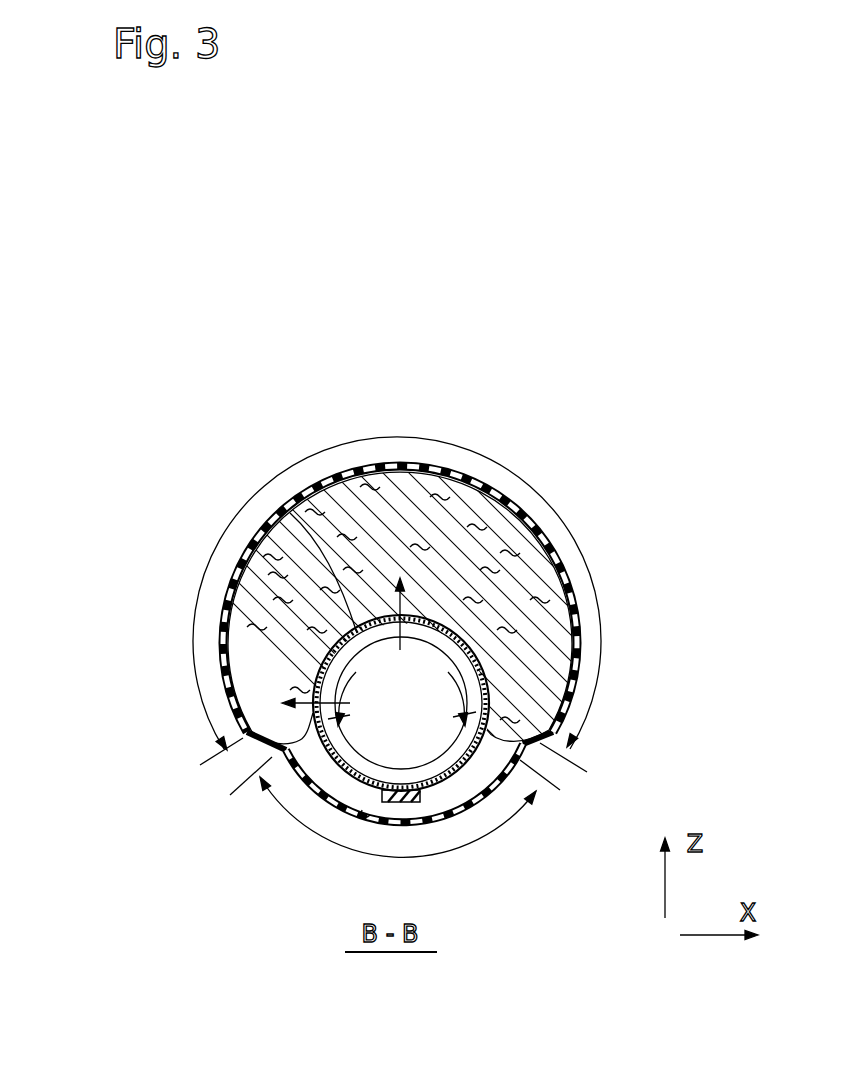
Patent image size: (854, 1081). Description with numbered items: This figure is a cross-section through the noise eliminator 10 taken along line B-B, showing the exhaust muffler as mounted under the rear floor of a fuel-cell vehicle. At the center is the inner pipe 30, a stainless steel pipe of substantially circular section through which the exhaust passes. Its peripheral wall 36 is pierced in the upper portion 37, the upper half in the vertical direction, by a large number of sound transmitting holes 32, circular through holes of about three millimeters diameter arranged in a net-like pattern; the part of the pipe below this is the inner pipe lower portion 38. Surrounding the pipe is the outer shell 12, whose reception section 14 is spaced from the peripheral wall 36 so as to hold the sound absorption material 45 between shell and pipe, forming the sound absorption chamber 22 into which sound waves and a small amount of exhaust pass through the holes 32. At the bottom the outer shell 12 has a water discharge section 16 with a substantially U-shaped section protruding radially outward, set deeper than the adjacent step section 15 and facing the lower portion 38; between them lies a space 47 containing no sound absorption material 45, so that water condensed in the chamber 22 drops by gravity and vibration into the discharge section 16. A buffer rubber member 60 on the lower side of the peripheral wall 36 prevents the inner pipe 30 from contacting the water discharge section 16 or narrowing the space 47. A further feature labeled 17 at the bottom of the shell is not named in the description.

The noise eliminator 10 is at (640, 436).
The outer shell 12 is at (466, 418).
The reception section 14 is at (196, 612).
The step section 15 is at (250, 769).
The water discharge section 16 is at (307, 833).
The joint portion 17 is at (362, 810).
The sound absorption chamber 22 is at (450, 522).
The inner pipe 30 is at (490, 651).
The sound transmitting holes 32 is at (490, 662).
The peripheral wall 36 is at (286, 504).
The upper portion 37 is at (405, 636).
The inner pipe lower portion 38 is at (398, 770).
The sound absorption material 45 is at (384, 532).
The space 47 is at (452, 809).
The buffer rubber member 60 is at (447, 822).